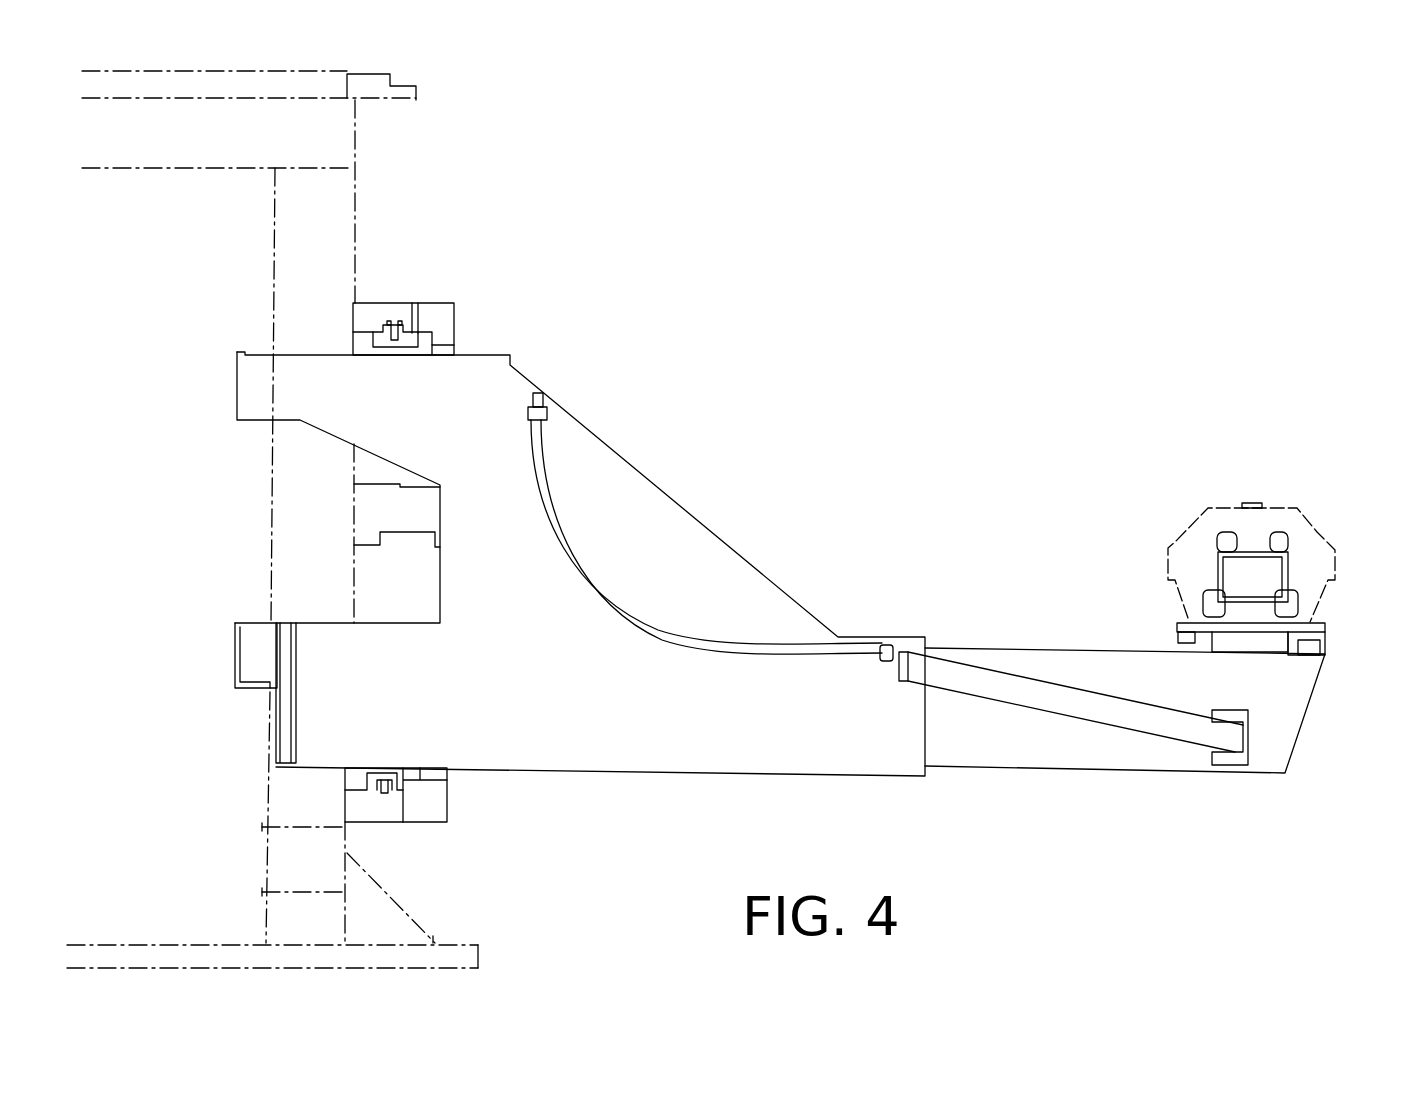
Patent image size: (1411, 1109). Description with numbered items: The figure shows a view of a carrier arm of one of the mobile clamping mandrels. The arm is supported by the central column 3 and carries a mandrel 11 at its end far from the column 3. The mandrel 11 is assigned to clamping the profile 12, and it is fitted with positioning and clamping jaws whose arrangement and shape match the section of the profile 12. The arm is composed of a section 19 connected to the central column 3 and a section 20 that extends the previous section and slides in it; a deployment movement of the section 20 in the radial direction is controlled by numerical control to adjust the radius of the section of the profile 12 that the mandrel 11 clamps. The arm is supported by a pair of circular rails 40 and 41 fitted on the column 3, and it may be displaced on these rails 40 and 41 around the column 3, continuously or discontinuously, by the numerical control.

The column 3 is at (390, 173).
The mandrel 11 is at (1312, 540).
The profile 12 is at (1287, 572).
The section 19 is at (628, 745).
The section 20 is at (1063, 753).
The circular rail 40 is at (398, 317).
The circular rail 41 is at (391, 805).